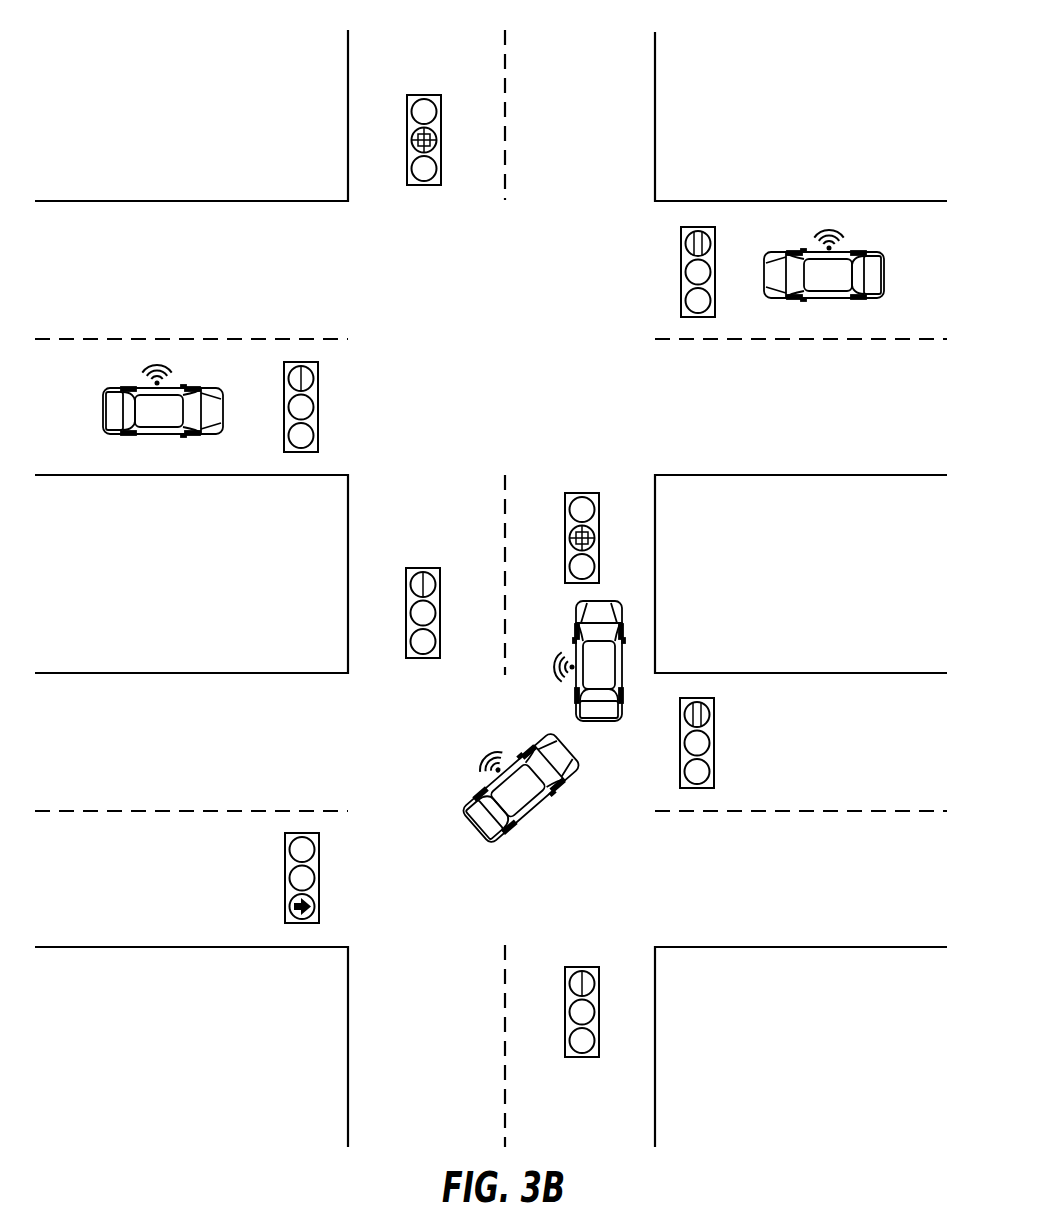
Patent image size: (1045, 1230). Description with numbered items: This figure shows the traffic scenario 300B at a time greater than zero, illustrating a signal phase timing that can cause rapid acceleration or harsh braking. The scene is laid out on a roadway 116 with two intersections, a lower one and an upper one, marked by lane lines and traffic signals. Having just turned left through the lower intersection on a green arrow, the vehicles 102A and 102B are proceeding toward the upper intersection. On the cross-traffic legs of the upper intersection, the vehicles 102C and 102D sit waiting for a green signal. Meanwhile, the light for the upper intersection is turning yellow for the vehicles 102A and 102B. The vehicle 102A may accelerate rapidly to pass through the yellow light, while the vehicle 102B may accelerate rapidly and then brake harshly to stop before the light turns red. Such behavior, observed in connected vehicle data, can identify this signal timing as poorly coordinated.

The traffic scenario at time t1 300B is at (156, 49).
The roadway 116 is at (735, 201).
The vehicle 102A is at (589, 673).
The vehicle 102B is at (521, 788).
The vehicle 102C is at (163, 413).
The vehicle 102D is at (824, 276).